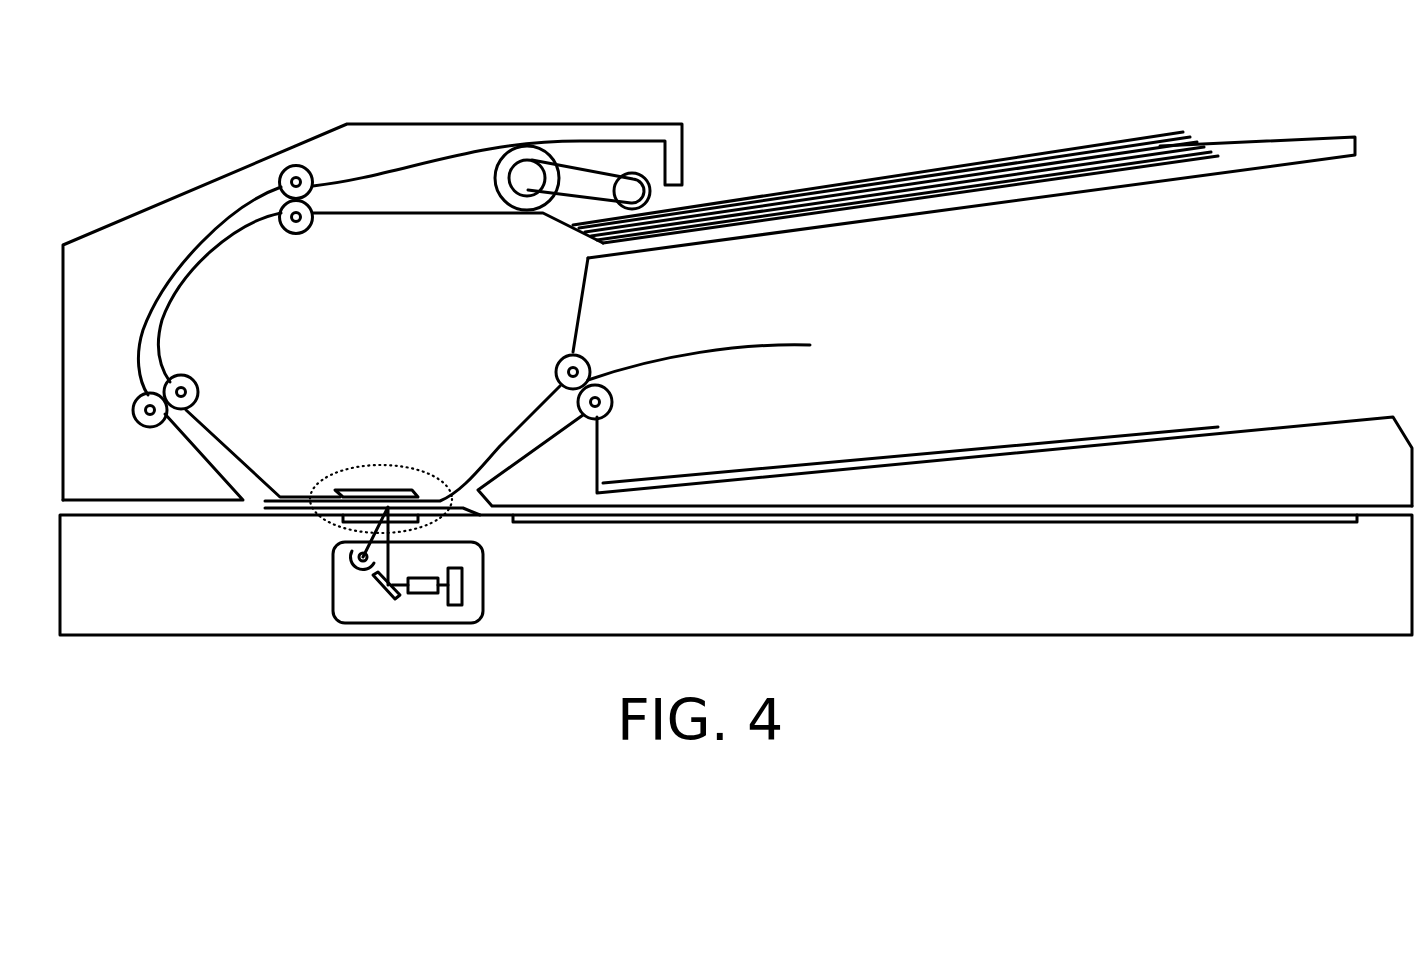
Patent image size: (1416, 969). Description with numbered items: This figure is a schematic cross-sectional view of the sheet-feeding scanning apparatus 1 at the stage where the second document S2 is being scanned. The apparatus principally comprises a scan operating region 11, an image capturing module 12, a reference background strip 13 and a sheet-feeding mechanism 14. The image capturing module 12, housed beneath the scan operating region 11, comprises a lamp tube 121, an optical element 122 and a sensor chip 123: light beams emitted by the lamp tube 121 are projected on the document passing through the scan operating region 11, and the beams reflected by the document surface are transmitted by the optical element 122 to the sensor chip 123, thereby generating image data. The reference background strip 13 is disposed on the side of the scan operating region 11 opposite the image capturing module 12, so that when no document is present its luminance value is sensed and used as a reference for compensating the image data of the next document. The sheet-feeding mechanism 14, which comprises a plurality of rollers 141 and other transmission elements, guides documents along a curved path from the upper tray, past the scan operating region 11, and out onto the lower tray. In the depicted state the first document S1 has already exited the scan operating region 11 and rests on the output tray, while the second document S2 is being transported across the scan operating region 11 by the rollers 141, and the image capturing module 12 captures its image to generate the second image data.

The sheet-feeding scanning apparatus 1 is at (115, 133).
The scan operating region 11 is at (428, 474).
The image capturing module 12 is at (418, 565).
The lamp tube 121 is at (352, 562).
The optical element 122 is at (373, 580).
The sensor chip 123 is at (462, 575).
The reference background strip 13 is at (355, 488).
The sheet-feeding mechanism 14 is at (397, 352).
The rollers 141 is at (305, 232).
The first document S1 is at (817, 460).
The second document S2 is at (630, 365).